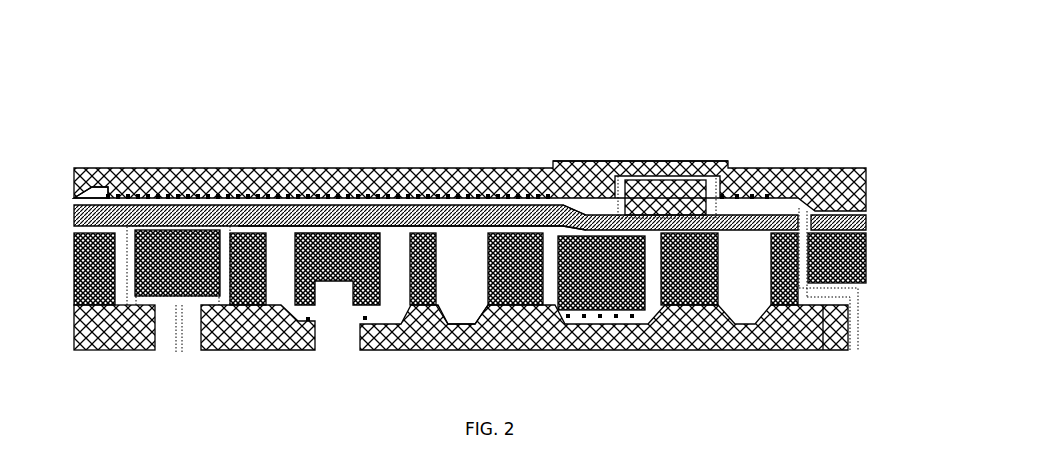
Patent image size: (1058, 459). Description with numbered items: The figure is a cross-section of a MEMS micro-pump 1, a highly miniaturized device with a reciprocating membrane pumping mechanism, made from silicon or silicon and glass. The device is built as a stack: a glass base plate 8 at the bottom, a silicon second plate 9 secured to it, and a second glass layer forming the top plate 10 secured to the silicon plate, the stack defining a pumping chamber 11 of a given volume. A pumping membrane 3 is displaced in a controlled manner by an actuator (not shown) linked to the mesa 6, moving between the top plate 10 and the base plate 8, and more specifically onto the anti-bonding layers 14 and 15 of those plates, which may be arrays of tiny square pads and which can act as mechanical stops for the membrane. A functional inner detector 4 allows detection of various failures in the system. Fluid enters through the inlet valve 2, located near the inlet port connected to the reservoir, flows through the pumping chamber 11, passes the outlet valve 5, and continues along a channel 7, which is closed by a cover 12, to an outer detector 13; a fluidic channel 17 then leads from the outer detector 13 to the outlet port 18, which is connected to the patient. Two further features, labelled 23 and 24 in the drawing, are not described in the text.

The micro-pump 1 is at (803, 57).
The inlet valve 2 is at (165, 275).
The pumping membrane 3 is at (292, 217).
The functional inner detector 4 is at (453, 214).
The outlet valve 5 is at (588, 212).
The mesa 6 is at (300, 278).
The channel 7 is at (638, 172).
The base plate 8 is at (106, 333).
The second plate 9 is at (825, 257).
The top plate 10 is at (825, 188).
The pumping chamber 11 is at (338, 207).
The cover 12 is at (687, 160).
The outer detector 13 is at (735, 205).
The anti-bonding layer 14 is at (243, 162).
The anti-bonding layer 15 is at (363, 317).
The fluidic channel 17 is at (811, 290).
The outlet port 18 is at (847, 317).
The wedge features 23 is at (170, 190).
The dotted strip 24 is at (199, 300).